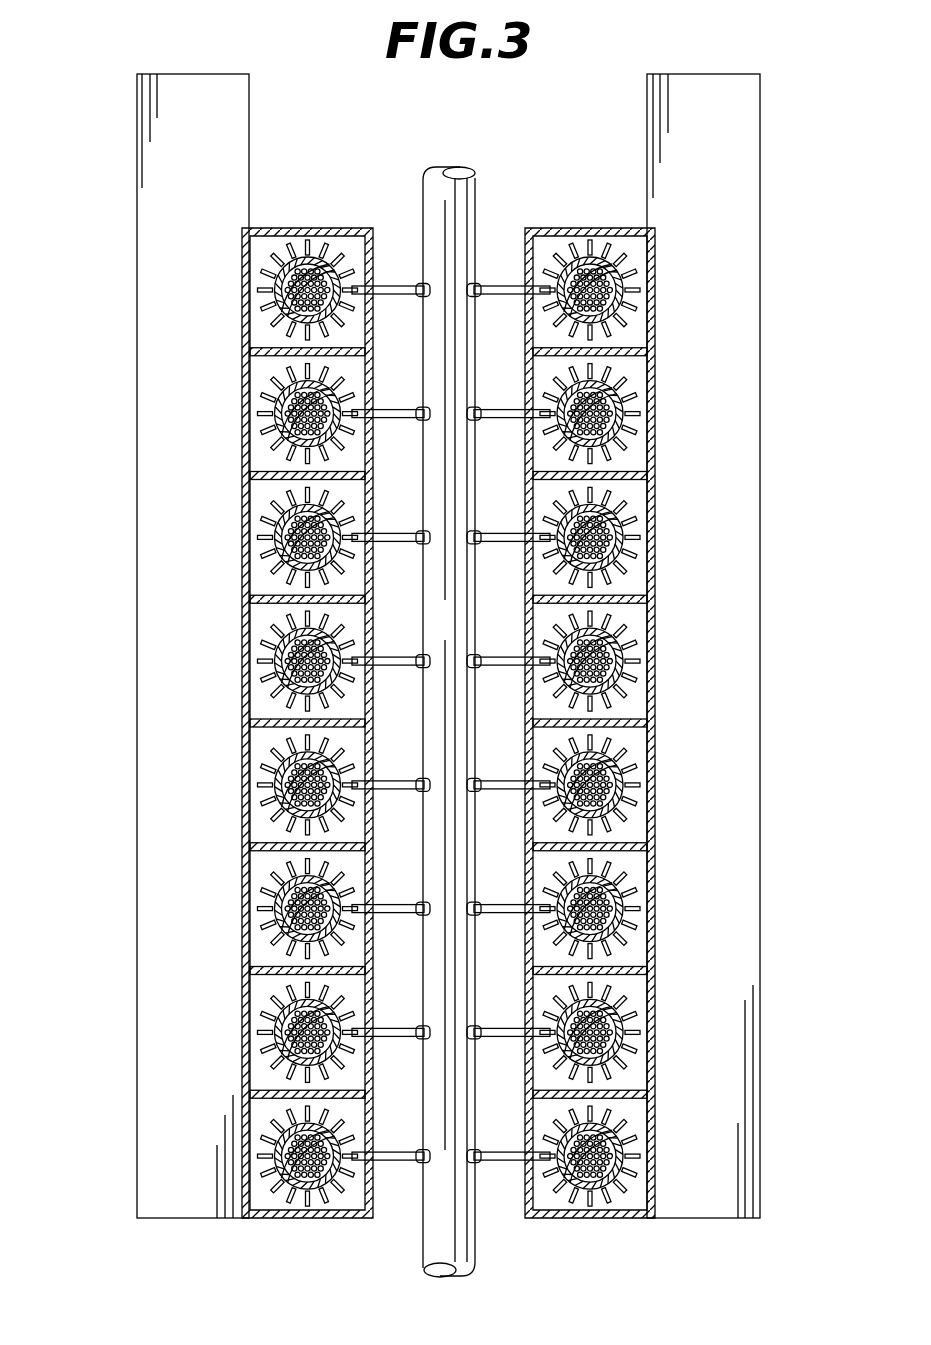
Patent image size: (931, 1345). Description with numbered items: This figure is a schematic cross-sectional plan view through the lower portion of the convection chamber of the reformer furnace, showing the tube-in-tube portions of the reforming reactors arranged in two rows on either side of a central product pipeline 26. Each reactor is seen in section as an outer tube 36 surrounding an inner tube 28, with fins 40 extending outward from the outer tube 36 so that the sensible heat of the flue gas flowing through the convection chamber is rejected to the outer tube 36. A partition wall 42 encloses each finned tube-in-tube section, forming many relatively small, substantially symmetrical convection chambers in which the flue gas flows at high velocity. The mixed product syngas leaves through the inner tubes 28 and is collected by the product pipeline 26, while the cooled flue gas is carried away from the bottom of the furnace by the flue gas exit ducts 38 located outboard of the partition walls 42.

The product pipeline 26 is at (476, 206).
The inner tube 28 is at (397, 1165).
The outer tube 36 is at (281, 250).
The flue gas duct 38 is at (147, 226).
The fins 40 is at (318, 244).
The partition wall 42 is at (303, 1220).